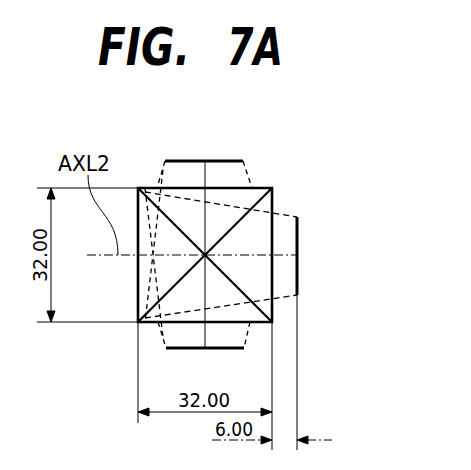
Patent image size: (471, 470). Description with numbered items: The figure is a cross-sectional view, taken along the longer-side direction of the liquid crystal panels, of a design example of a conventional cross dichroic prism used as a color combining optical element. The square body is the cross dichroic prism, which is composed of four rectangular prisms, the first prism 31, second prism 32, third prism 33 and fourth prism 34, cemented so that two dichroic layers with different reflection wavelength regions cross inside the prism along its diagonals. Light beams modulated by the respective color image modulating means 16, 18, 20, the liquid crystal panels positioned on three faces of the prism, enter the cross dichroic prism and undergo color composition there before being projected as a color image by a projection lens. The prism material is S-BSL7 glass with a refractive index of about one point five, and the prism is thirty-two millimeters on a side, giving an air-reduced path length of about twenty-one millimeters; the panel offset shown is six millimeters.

The color image modulating means 16 is at (228, 349).
The color image modulating means 18 is at (298, 237).
The color image modulating means 20 is at (225, 161).
The first prism 31 is at (152, 188).
The second prism 32 is at (273, 200).
The third prism 33 is at (259, 323).
The fourth prism 34 is at (137, 292).